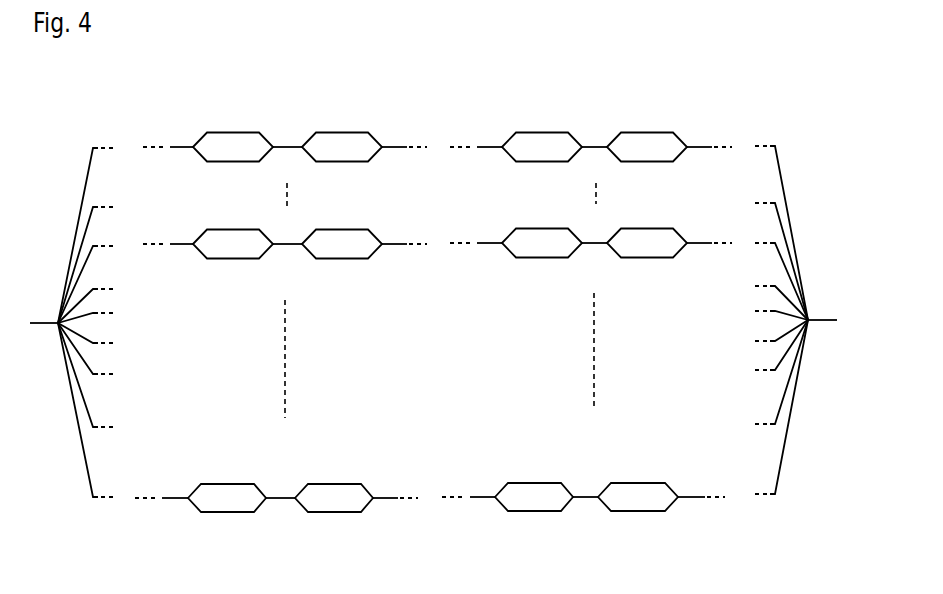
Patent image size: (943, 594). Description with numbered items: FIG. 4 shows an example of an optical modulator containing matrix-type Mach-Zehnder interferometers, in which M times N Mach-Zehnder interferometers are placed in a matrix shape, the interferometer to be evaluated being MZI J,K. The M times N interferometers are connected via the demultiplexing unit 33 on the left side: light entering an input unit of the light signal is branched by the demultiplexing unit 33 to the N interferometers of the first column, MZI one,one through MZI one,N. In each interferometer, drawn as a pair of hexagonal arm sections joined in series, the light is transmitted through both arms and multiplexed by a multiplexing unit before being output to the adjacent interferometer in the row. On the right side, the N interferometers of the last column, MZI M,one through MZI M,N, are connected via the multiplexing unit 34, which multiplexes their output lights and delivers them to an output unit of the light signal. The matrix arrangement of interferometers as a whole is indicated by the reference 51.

The demultiplexing unit 33 is at (58, 322).
The multiplexing unit 34 is at (808, 320).
The Mach-Zehnder interferometer array 51 is at (613, 80).